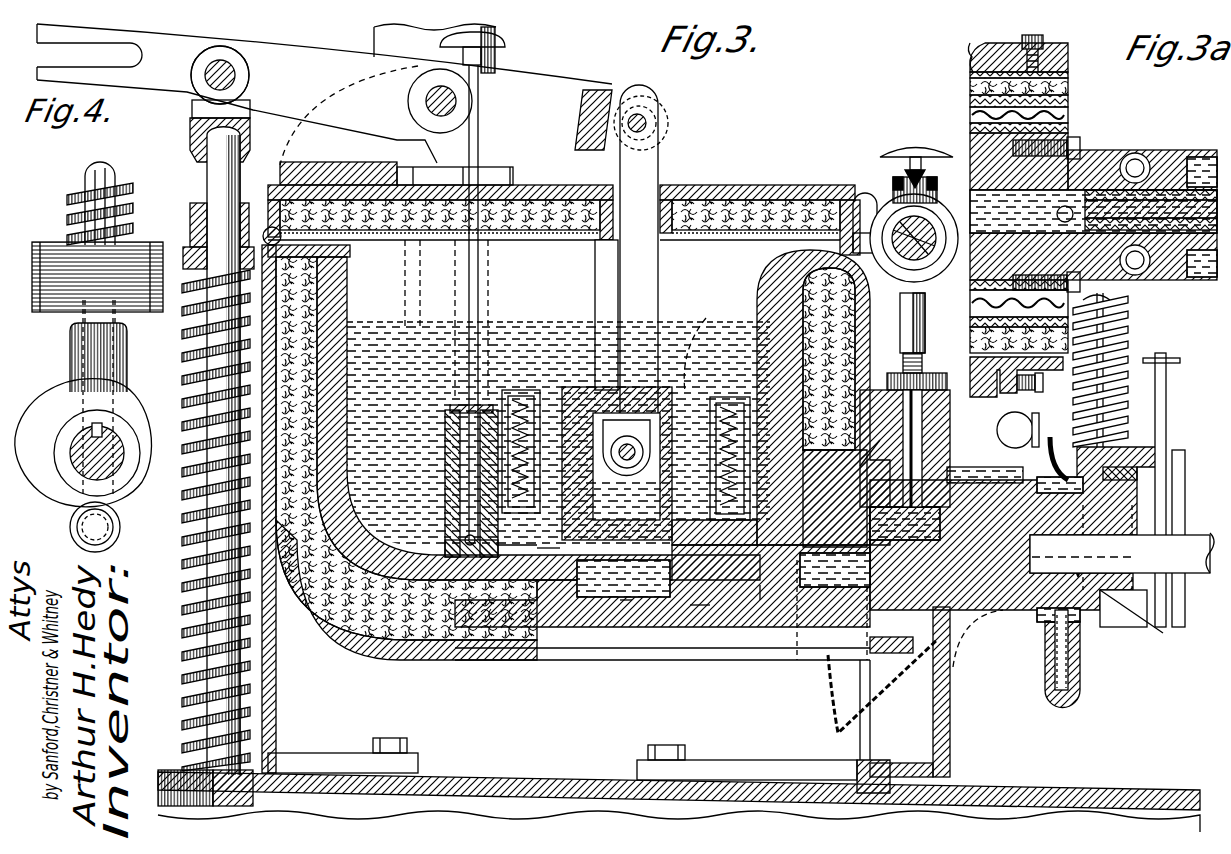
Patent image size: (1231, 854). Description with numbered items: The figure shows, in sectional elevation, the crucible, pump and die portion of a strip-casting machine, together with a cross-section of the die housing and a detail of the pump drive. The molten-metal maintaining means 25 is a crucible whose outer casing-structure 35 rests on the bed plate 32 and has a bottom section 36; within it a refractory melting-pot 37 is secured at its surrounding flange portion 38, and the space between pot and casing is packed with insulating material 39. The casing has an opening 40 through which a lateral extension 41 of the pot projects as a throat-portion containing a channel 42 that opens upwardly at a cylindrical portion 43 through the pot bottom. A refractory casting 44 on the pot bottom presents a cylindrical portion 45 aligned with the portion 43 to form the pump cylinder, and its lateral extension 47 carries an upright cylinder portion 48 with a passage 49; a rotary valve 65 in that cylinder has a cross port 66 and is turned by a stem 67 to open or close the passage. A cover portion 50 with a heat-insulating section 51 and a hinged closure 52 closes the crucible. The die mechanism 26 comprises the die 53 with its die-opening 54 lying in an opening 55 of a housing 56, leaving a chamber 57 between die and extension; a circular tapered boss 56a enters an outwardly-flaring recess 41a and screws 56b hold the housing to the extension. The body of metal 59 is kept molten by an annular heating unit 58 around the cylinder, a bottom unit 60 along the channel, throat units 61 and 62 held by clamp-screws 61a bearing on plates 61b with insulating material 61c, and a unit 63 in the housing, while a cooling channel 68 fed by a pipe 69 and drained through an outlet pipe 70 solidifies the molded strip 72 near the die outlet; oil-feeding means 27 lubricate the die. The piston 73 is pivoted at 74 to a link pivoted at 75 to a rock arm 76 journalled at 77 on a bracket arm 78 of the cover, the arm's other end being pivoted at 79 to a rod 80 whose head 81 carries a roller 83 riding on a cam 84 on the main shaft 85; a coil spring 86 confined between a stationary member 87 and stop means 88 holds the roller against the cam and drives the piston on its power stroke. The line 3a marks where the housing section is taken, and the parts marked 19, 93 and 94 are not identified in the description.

In FIG. 3, the section line 3a is at (1101, 555).
In FIG. 3, the pivot pin 19 is at (222, 62).
In FIG. 3, the pivotal connection 79 is at (220, 75).
In FIG. 3, the molten-metal maintaining means 25 is at (585, 190).
In FIG. 3a, the die mechanism 26 is at (975, 145).
In FIG. 3, the oil-feeding means 27 is at (876, 198).
In FIG. 4, the bed plate 32 is at (60, 300).
In FIG. 3, the bed plate 32 is at (498, 775).
In FIG. 3, the outer casing-structure 35 is at (276, 665).
In FIG. 3a, the outer casing-structure 35 is at (1070, 62).
In FIG. 3, the bottom section 36 is at (478, 662).
In FIG. 3, the melting-pot 37 is at (335, 285).
In FIG. 3, the surrounding flange portion 38 is at (266, 227).
In FIG. 3, the insulating material 39 is at (300, 290).
In FIG. 3, the opening 40 is at (950, 410).
In FIG. 3, the lateral extension 41 is at (926, 288).
In FIG. 3, the outwardly-flaring recess 41a is at (828, 592).
In FIG. 3, the channel 42 is at (700, 610).
In FIG. 3, the cylindrical portion 43 is at (630, 605).
In FIG. 3, the casting 44 is at (628, 572).
In FIG. 3, the cylindrical portion 45 is at (703, 345).
In FIG. 3, the lateral extension 47 is at (548, 548).
In FIG. 3, the upright cylinder portion 48 is at (447, 482).
In FIG. 3, the passage 49 is at (505, 548).
In FIG. 3, the cover portion 50 is at (750, 200).
In FIG. 3, the heat-insulating section 51 is at (545, 212).
In FIG. 3a, the hinged closure 52 is at (1120, 265).
In FIG. 3, the die 53 is at (1105, 472).
In FIG. 3a, the die 53 is at (1160, 190).
In FIG. 3, the die-opening 54 is at (1085, 488).
In FIG. 3, the opening 55 is at (1163, 633).
In FIG. 3, the housing 56 is at (1020, 633).
In FIG. 3, the circular tapered boss 56a is at (936, 192).
In FIG. 3a, the screws 56b is at (1080, 147).
In FIG. 3, the chamber 57 is at (800, 480).
In FIG. 3a, the chamber 57 is at (1055, 200).
In FIG. 3, the electrical heating unit 58 is at (520, 392).
In FIG. 3, the body of metal 59 is at (738, 395).
In FIG. 3, the electrical heating unit 60 is at (758, 648).
In FIG. 3, the electrical heating unit 61 is at (795, 655).
In FIG. 3a, the electrical heating unit 61 is at (1070, 119).
In FIG. 3a, the clamp-screws 61a is at (1044, 42).
In FIG. 3, the plates 61b is at (1036, 385).
In FIG. 3a, the plates 61b is at (1070, 84).
In FIG. 3, the insulating material 61c is at (1160, 338).
In FIG. 3a, the insulating material 61c is at (1070, 102).
In FIG. 3, the electrical heating unit 62 is at (760, 585).
In FIG. 3, the electrical heating unit 63 is at (985, 660).
In FIG. 3a, the electrical heating unit 63 is at (1136, 153).
In FIG. 3, the rotary valve 65 is at (467, 455).
In FIG. 3, the cross port 66 is at (465, 548).
In FIG. 3, the stem 67 is at (480, 263).
In FIG. 3, the channel 68 is at (1192, 253).
In FIG. 3a, the channel 68 is at (1200, 157).
In FIG. 3, the pipe 69 is at (1082, 650).
In FIG. 3, the outlet pipe 70 is at (1058, 440).
In FIG. 3, the molded strip 72 is at (1122, 553).
In FIG. 3, the piston 73 is at (602, 435).
In FIG. 3, the pivotal connection 74 is at (627, 468).
In FIG. 3, the pivotal connection 75 is at (650, 123).
In FIG. 3, the rock arm 76 is at (281, 62).
In FIG. 3, the journal 77 is at (426, 103).
In FIG. 3, the bracket arm 78 is at (300, 148).
In FIG. 4, the rod 80 is at (88, 182).
In FIG. 3, the rod 80 is at (207, 175).
In FIG. 4, the head 81 is at (70, 350).
In FIG. 4, the roller 83 is at (121, 523).
In FIG. 4, the cam 84 is at (30, 420).
In FIG. 4, the shaft 85 is at (118, 455).
In FIG. 4, the coil spring 86 is at (67, 225).
In FIG. 3, the coil spring 86 is at (190, 350).
In FIG. 4, the stationary member 87 is at (145, 262).
In FIG. 3, the stationary member 87 is at (160, 772).
In FIG. 3, the stop means 88 is at (190, 225).
In FIG. 3, the chamber 93 is at (948, 470).
In FIG. 3, the nut 94 is at (950, 378).